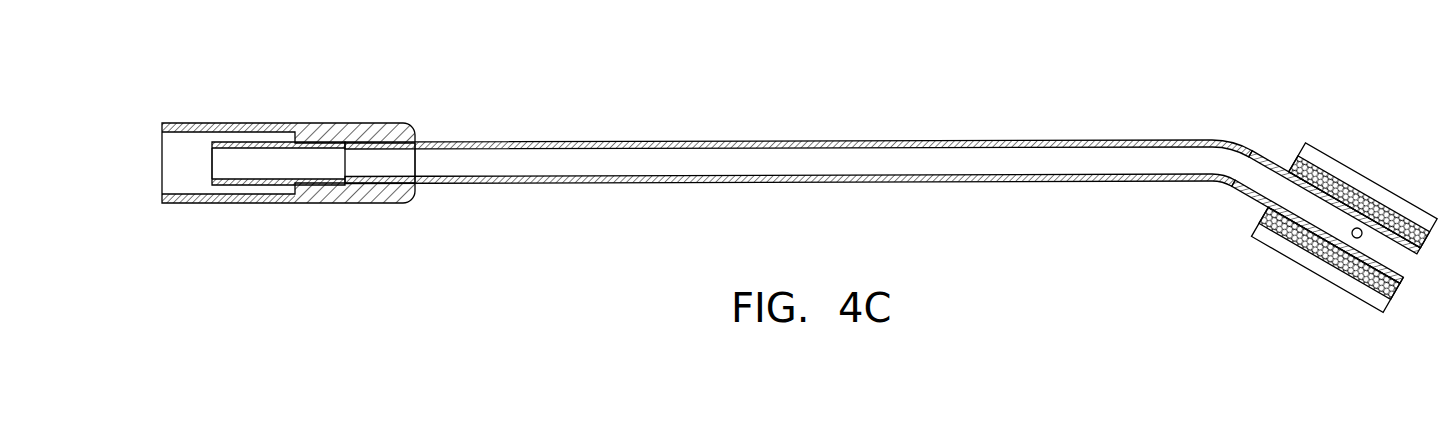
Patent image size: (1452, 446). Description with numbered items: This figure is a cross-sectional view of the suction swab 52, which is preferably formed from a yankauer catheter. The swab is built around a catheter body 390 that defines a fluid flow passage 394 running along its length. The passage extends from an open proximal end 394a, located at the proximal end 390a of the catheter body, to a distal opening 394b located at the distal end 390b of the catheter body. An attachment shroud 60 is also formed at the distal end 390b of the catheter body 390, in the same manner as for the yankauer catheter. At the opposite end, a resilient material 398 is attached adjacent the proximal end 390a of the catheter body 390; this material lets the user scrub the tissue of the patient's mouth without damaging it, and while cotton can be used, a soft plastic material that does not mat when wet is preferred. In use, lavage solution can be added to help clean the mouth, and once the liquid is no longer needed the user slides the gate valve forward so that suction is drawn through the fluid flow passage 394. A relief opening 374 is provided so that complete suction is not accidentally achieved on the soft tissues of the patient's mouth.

The attachment shroud 60 is at (243, 123).
The suction swab 52 is at (805, 140).
The catheter body 390 is at (1000, 145).
The proximal end of the catheter body 390a is at (1402, 280).
The distal end of the catheter body 390b is at (313, 198).
The fluid flow passage 394 is at (585, 165).
The open proximal end 394a is at (1408, 262).
The distal opening 394b is at (258, 166).
The resilient material 398 is at (1312, 163).
The relief opening 374 is at (1352, 237).